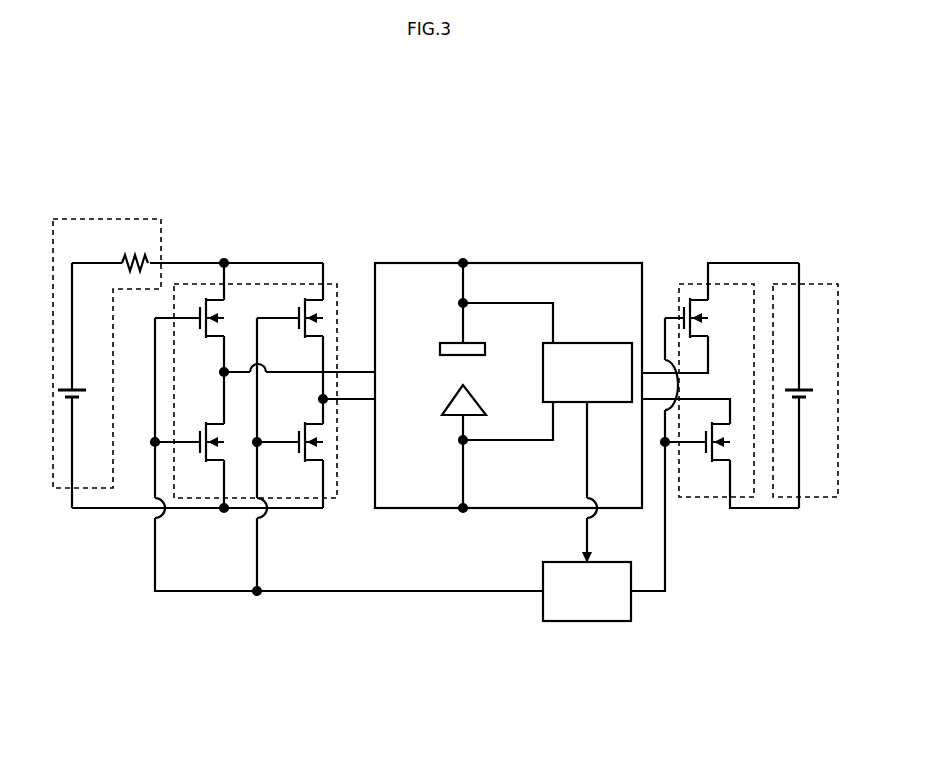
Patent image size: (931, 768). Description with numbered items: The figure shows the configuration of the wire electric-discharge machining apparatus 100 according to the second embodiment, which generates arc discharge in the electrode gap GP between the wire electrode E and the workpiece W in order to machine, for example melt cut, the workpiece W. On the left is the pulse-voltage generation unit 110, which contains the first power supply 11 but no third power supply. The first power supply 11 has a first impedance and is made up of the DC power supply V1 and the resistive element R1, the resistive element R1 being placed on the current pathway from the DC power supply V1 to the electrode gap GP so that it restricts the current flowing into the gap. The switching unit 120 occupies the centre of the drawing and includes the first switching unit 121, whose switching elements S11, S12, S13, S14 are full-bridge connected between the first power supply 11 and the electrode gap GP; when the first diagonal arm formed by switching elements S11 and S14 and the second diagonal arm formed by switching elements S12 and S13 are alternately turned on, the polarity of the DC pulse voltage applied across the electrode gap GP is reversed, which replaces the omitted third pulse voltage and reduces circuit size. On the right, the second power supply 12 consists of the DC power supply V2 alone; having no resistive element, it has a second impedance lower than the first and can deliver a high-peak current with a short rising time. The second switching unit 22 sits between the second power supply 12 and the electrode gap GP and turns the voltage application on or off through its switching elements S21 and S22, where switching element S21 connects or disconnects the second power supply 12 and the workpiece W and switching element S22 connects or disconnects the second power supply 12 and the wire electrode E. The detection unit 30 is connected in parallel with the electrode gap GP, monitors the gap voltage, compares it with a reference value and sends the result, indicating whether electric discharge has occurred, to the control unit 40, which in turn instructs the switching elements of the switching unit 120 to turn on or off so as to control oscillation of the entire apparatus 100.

The wire electric-discharge machining apparatus 100 is at (706, 184).
The pulse-voltage generation unit 110 is at (88, 149).
The first power supply 11 is at (88, 218).
The resistive element R1 is at (135, 251).
The DC power supply V1 is at (78, 385).
The first switching unit 121 is at (206, 499).
The switching element S11 is at (189, 332).
The switching element S12 is at (189, 455).
The switching element S13 is at (290, 332).
The switching element S14 is at (290, 455).
The switching unit 120 is at (203, 566).
The workpiece W is at (449, 349).
The wire electrode E is at (449, 403).
The electrode gap GP is at (480, 373).
The detection unit 30 is at (609, 343).
The control unit 40 is at (612, 622).
The second switching unit 22 is at (703, 498).
The switching element S21 is at (704, 322).
The switching element S22 is at (697, 454).
The second power supply 12 is at (820, 498).
The DC power supply V2 is at (805, 385).